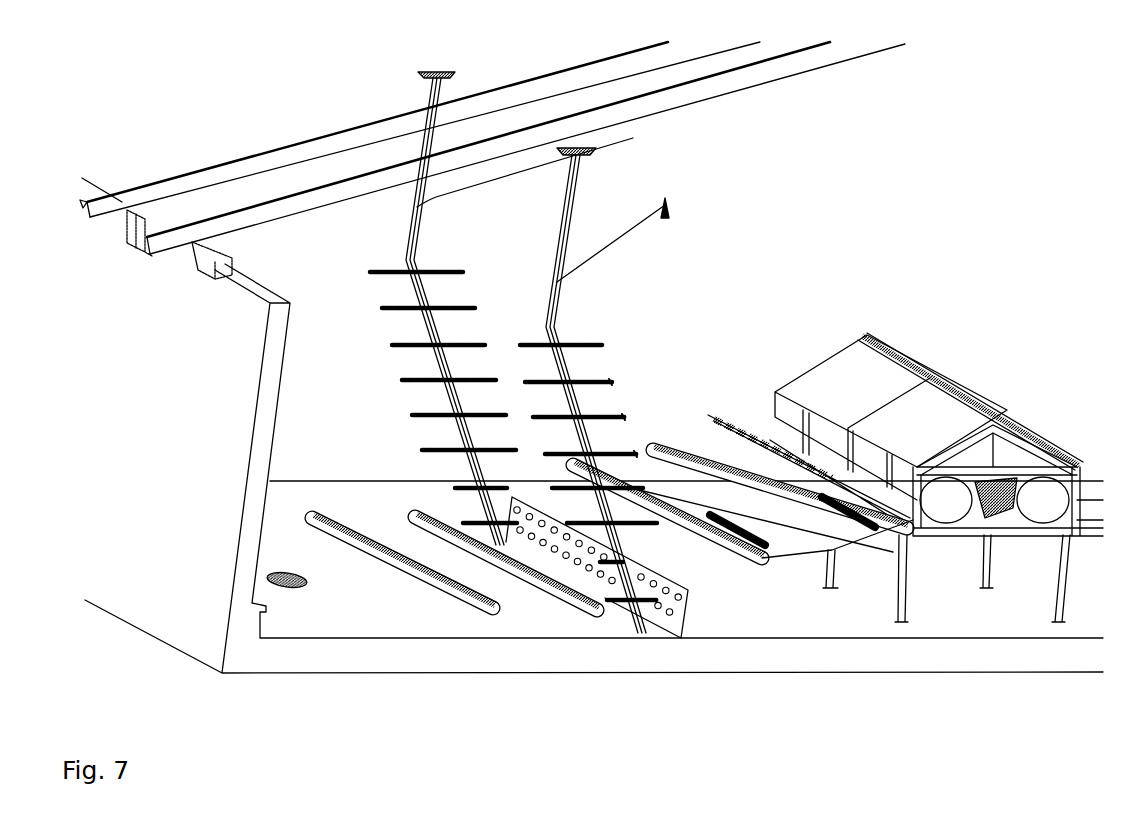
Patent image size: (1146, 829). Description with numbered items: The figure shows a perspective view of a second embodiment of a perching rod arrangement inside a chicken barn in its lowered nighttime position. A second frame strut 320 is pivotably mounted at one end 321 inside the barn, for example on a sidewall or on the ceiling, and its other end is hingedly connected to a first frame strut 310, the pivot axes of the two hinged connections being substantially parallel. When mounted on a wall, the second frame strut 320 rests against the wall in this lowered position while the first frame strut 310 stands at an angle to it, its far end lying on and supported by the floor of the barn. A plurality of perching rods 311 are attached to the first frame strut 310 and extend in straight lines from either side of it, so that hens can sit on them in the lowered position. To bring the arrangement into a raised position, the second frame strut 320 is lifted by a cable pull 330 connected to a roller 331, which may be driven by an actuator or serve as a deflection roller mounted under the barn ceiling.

The first frame strut 310 is at (568, 372).
The perching rods 311 is at (620, 450).
The second frame strut 320 is at (577, 196).
The end 321 is at (622, 144).
The cable pull 330 is at (609, 250).
The roller 331 is at (668, 214).